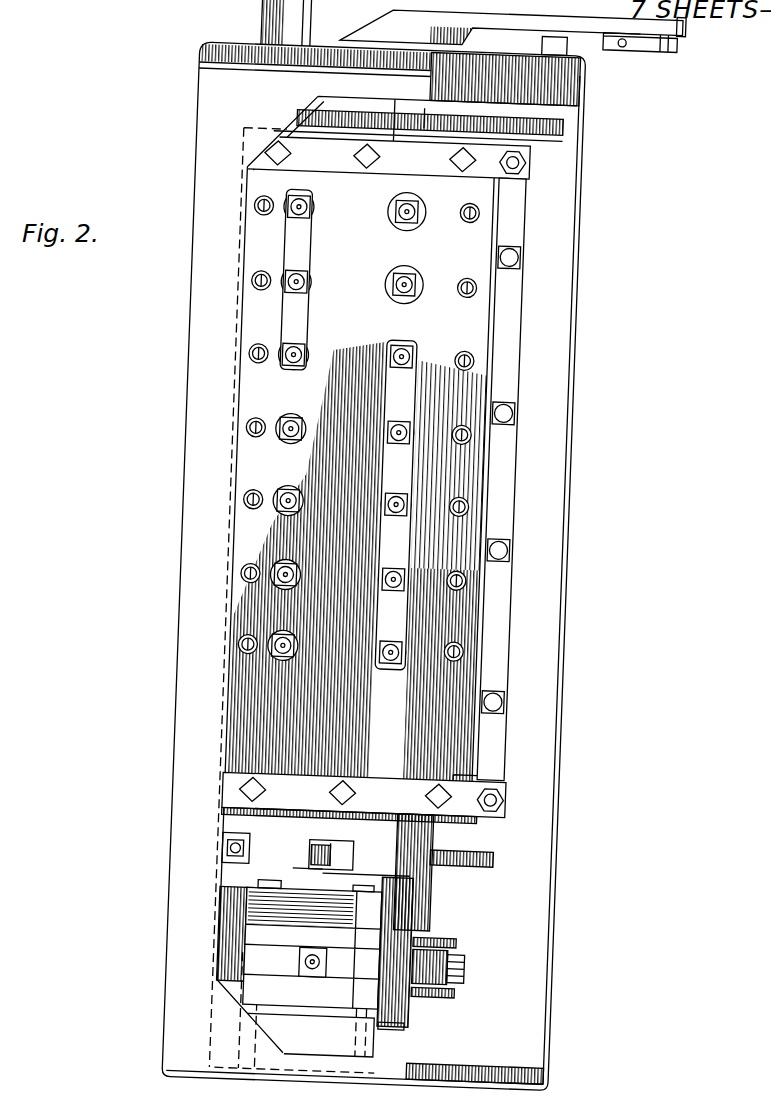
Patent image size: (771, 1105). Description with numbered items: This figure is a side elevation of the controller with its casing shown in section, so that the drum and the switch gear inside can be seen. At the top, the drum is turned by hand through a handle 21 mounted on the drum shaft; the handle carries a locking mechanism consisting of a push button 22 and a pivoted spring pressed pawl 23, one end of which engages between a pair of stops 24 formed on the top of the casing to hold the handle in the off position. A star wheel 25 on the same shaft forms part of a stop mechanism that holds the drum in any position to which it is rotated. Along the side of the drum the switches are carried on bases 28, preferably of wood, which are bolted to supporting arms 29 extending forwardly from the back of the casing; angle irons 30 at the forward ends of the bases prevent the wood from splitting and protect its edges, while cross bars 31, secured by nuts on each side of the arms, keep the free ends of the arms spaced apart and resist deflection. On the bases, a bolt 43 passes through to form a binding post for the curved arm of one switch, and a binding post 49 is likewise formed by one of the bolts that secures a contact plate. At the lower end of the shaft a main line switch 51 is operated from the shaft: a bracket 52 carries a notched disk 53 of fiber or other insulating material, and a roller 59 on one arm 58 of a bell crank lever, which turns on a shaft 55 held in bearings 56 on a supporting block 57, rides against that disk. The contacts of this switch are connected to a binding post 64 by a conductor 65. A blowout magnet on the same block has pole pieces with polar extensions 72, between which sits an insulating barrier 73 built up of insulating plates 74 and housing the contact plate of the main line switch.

The handle 21 is at (513, 34).
The push button 22 is at (668, 21).
The pivoted spring pressed pawl 23 is at (648, 27).
The stops 24 is at (567, 37).
The star wheel 25 is at (568, 115).
The bases 28 is at (488, 310).
The supporting arms 29 is at (394, 156).
The angle irons 30 is at (523, 516).
The cross bars 31 is at (527, 152).
The bolt 43 is at (307, 497).
The binding post 49 is at (413, 281).
The main line switch 51 is at (418, 891).
The bracket 52 is at (462, 828).
The disk 53 is at (520, 847).
The shaft 55 is at (429, 1020).
The bearings 56 is at (445, 903).
The supporting block 57 is at (370, 998).
The arm of bell crank lever 58 is at (352, 856).
The roller 59 is at (347, 846).
The binding post 64 is at (336, 961).
The conductor 65 is at (339, 964).
The polar extensions 72 is at (483, 930).
The insulating barrier 73 is at (498, 973).
The insulating plates 74 is at (458, 929).